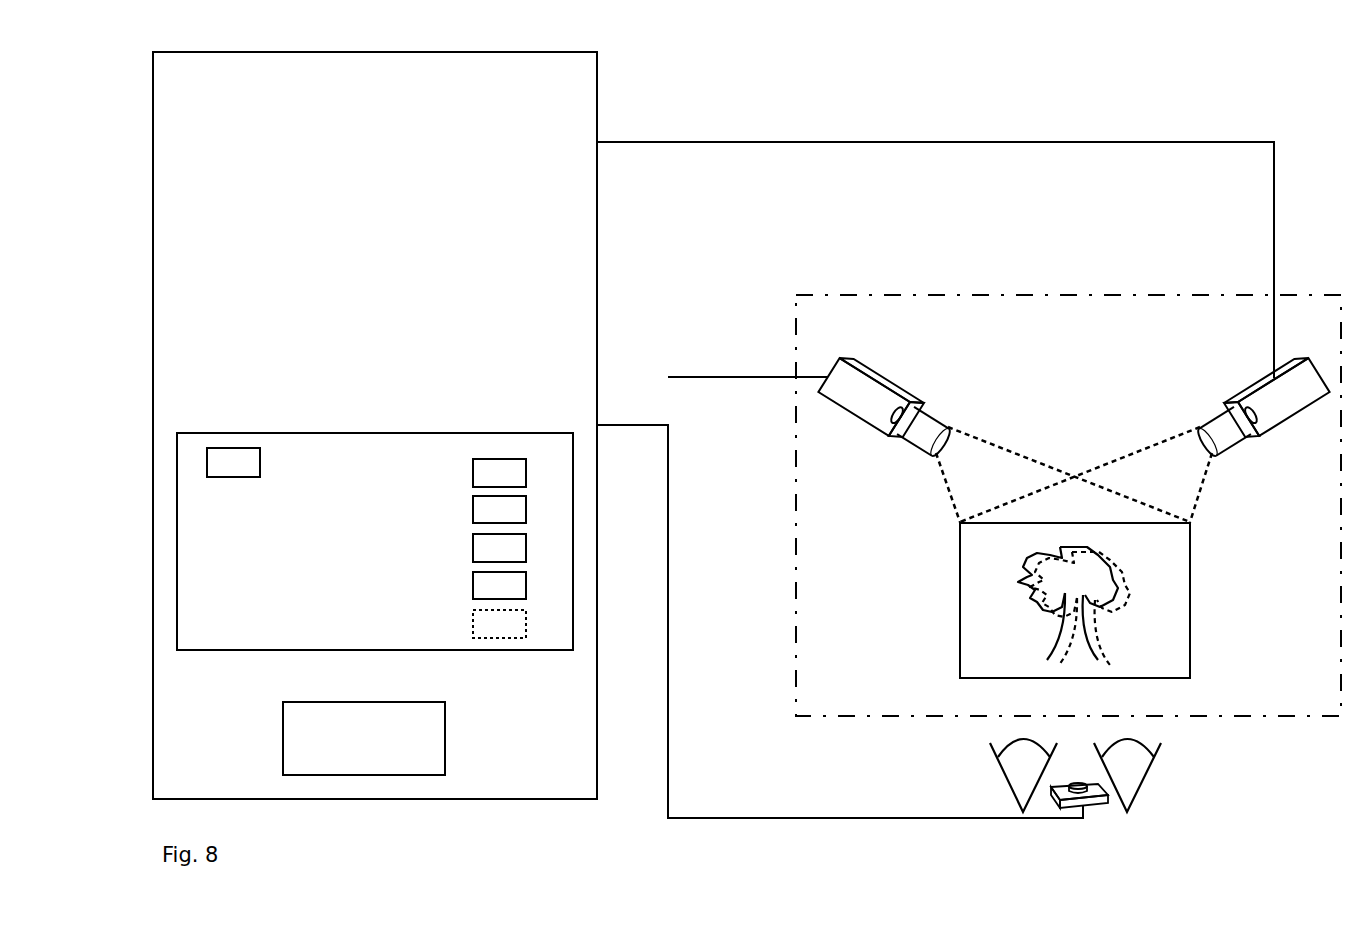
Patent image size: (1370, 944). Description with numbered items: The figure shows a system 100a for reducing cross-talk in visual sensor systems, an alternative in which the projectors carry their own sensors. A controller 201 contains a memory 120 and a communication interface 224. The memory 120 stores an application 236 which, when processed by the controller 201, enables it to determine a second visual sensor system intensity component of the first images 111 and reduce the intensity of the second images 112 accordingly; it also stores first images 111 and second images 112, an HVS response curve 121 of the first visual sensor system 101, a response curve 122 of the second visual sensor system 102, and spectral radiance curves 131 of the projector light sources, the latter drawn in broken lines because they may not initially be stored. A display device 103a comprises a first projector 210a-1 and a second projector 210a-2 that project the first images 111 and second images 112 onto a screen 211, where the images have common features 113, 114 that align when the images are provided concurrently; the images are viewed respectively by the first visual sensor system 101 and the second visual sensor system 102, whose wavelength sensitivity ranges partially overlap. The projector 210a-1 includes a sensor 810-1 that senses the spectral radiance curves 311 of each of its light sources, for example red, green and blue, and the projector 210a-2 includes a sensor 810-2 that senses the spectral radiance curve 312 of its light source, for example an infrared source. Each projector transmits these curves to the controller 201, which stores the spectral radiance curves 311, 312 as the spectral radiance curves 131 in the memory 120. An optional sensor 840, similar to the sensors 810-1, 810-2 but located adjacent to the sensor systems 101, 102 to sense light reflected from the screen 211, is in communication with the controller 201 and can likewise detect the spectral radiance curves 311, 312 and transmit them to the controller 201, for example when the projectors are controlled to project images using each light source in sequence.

The system 100a is at (1248, 88).
The controller 201 is at (375, 425).
The memory 120 is at (375, 541).
The application 236 is at (233, 462).
The first images 111 is at (741, 499).
The second images 112 is at (970, 556).
The HVS response curve 121 is at (499, 548).
The response curve 122 is at (499, 585).
The spectral radiance curves 131 is at (499, 624).
The communication interface 224 is at (364, 738).
The spectral radiance curve 312 is at (700, 121).
The spectral radiance curves 311 is at (673, 353).
The display device 103a is at (1068, 505).
The projector 210a-1 is at (887, 407).
The projector 210a-2 is at (1259, 407).
The sensor 810-1 is at (899, 408).
The sensor 810-2 is at (1249, 408).
The screen 211 is at (960, 660).
The common features 113 is at (1018, 583).
The common features 114 is at (1127, 580).
The first visual sensor system 101 is at (1007, 778).
The second visual sensor system 102 is at (1142, 780).
The sensor 840 is at (1095, 808).